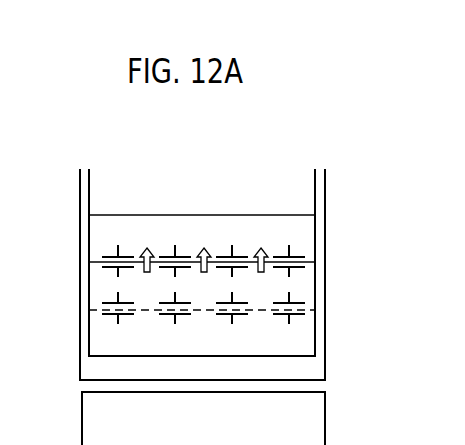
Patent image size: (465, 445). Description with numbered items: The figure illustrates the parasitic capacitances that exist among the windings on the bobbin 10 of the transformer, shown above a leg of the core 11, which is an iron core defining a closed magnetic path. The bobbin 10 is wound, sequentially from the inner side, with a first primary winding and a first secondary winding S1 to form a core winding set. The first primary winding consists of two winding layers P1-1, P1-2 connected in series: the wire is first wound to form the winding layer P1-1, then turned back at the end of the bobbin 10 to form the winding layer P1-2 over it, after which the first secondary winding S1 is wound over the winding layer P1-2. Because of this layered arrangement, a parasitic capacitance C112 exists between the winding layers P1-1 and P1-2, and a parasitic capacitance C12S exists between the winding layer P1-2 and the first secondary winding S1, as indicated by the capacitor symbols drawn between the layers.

The bobbin 10 is at (325, 209).
The core 11 is at (325, 407).
The first secondary winding S1 is at (221, 234).
The winding layer P1-2 is at (360, 290).
The winding layer P1-1 is at (360, 338).
The parasitic capacitance C12S is at (165, 263).
The parasitic capacitance C112 is at (165, 309).